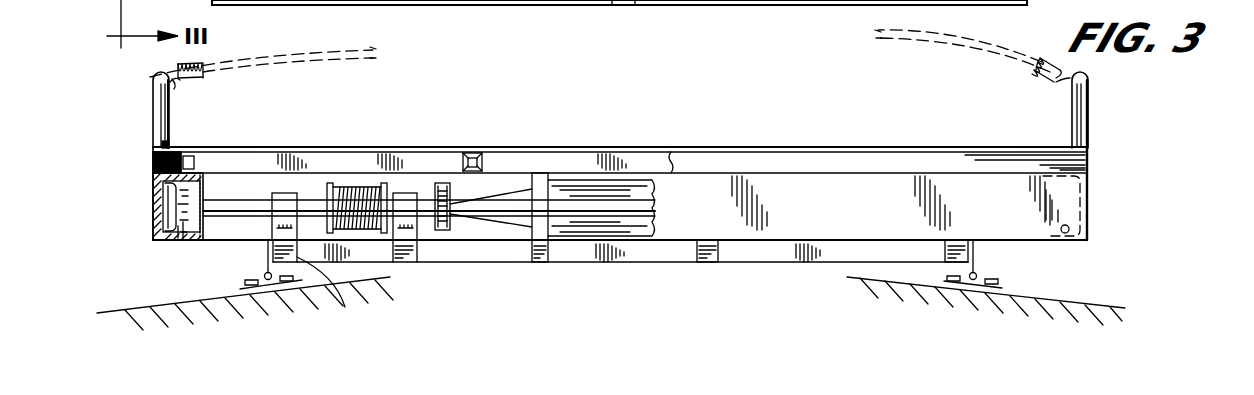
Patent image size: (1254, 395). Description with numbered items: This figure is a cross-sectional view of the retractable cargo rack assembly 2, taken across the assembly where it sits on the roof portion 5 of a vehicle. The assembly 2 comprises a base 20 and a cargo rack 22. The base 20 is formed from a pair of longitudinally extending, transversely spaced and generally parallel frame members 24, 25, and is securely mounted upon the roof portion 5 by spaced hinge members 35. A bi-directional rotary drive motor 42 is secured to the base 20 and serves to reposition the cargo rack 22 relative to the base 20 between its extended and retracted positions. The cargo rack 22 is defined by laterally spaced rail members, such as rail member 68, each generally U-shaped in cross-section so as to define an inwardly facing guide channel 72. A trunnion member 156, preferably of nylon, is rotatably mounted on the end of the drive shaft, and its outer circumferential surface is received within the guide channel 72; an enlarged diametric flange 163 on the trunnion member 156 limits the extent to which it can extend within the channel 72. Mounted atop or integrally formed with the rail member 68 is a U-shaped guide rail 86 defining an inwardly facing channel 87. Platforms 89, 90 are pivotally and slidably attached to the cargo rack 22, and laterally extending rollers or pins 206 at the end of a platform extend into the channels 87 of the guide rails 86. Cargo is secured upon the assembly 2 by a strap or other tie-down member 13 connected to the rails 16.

The retractable cargo rack assembly 2 is at (700, 128).
The roof portion 5 is at (130, 305).
The tie-down member 13 is at (300, 52).
The rails 16 is at (160, 103).
The base 20 is at (552, 268).
The cargo rack 22 is at (1098, 211).
The frame member 24 is at (976, 253).
The frame member 25 is at (336, 293).
The hinge member 35 is at (262, 260).
The bi-directional rotary drive motor 42 is at (610, 222).
The rail member 68 is at (157, 229).
The guide channel 72 is at (168, 191).
The guide rail 86 is at (166, 145).
The channel 87 is at (156, 158).
The platform 89 is at (636, 14).
The platform 90 is at (611, 14).
The trunnion member 156 is at (184, 242).
The enlarged diametric flange 163 is at (207, 191).
The rollers or pins 206 is at (157, 167).